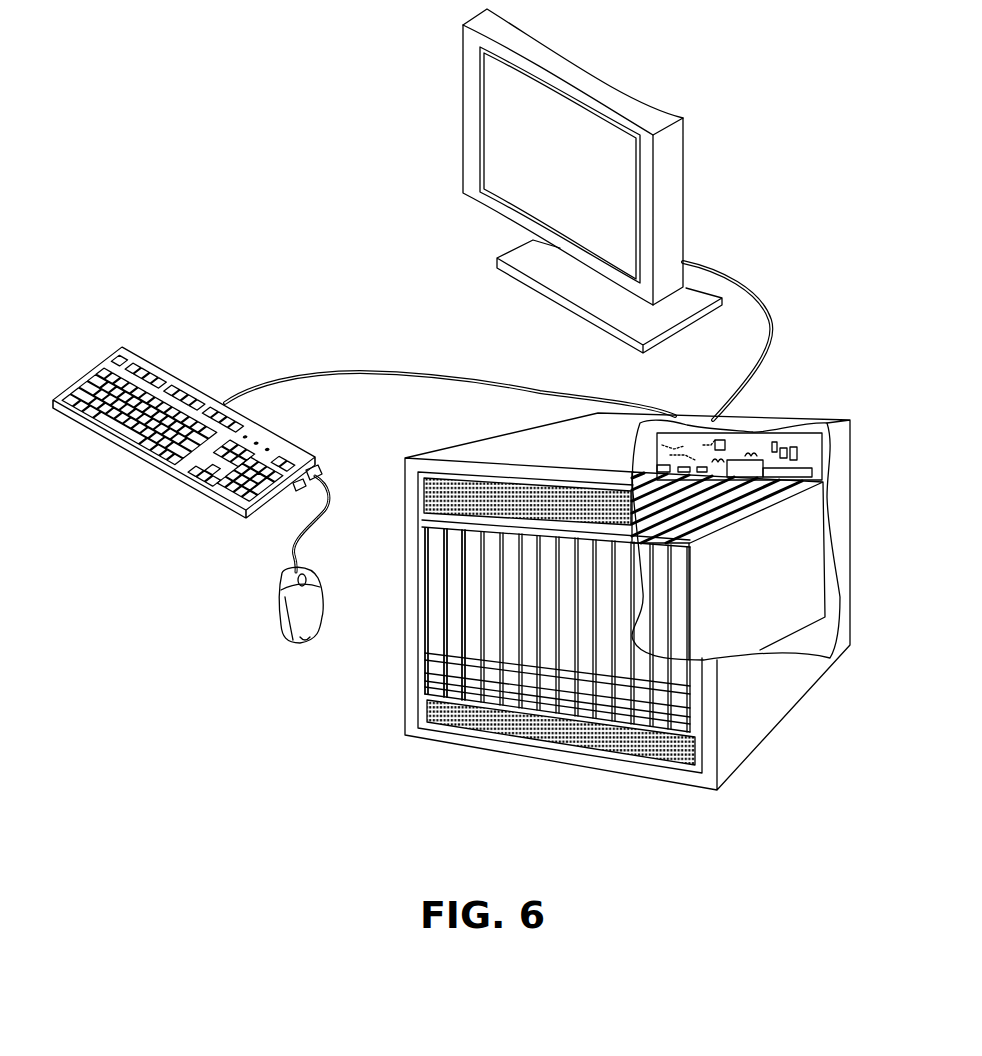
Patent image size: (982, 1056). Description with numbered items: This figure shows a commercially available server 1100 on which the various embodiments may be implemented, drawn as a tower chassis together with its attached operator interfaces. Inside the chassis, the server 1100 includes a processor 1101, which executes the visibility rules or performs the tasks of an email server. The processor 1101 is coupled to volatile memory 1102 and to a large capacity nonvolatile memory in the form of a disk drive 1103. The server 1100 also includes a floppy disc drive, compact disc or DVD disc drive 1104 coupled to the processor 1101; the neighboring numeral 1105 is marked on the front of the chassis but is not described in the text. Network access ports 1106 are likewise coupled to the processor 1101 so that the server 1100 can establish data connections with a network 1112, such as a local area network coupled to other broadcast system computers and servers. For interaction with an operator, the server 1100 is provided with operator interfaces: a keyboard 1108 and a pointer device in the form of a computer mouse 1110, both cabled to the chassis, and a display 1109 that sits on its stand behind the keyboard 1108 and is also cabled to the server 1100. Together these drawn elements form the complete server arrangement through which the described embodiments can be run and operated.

The server 1100 is at (488, 440).
The processor 1101 is at (655, 468).
The volatile memory 1102 is at (805, 473).
The disk drive 1103 is at (468, 573).
The disc drive 1104 is at (432, 627).
The ventilation opening 1105 is at (450, 600).
The network access ports 1106 is at (745, 468).
The keyboard 1108 is at (183, 383).
The display 1109 is at (683, 208).
The computer mouse 1110 is at (288, 637).
The network 1112 is at (788, 437).